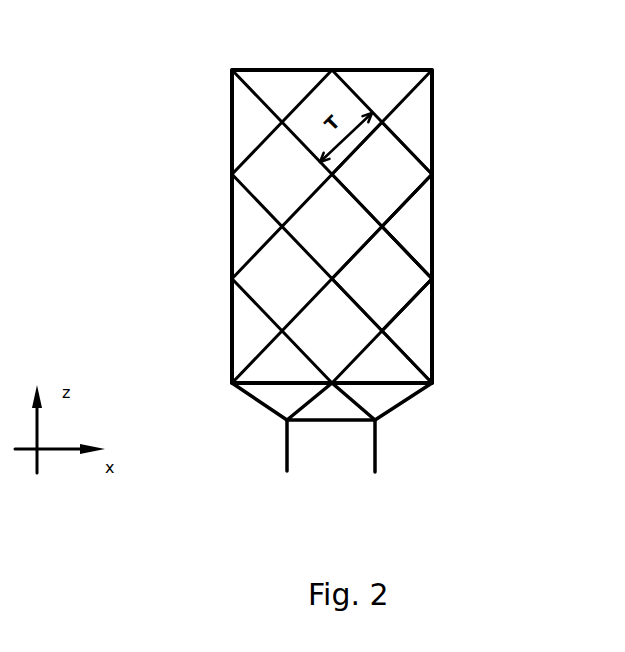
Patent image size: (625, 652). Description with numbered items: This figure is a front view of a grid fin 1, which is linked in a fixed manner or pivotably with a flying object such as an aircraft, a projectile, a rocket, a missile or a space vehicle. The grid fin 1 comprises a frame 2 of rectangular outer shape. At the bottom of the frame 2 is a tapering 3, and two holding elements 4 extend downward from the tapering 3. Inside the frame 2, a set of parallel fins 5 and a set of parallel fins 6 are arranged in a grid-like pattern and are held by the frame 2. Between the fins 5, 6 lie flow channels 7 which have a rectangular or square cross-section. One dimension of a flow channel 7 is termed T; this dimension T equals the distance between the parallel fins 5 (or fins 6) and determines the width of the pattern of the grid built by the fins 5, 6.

The grid fin 1 is at (455, 98).
The frame 2 is at (433, 122).
The tapering 3 is at (408, 400).
The holding elements 4 is at (287, 441).
The parallel fins 5 is at (407, 148).
The parallel fins 6 is at (405, 200).
The flow channels 7 is at (375, 190).